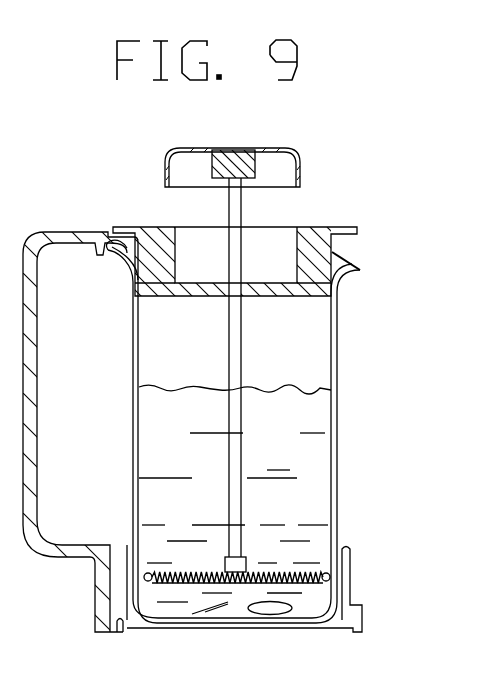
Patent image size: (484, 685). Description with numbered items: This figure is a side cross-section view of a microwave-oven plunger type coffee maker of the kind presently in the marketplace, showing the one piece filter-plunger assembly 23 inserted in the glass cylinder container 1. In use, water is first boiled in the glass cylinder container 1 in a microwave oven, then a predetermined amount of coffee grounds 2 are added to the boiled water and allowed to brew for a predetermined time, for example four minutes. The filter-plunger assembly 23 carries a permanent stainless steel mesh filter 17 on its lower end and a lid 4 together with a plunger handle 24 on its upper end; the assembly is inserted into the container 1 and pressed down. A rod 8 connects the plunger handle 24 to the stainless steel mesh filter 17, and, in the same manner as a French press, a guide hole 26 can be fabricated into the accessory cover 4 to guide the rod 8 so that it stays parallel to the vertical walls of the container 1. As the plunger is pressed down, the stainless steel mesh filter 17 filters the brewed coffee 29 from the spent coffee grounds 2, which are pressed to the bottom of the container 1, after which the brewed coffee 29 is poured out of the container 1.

The glass cylinder container 1 is at (242, 432).
The coffee grounds 2 is at (300, 600).
The lid 4 is at (229, 237).
The rod 8 is at (309, 375).
The stainless steel mesh filter 17 is at (279, 546).
The filter-plunger assembly 23 is at (299, 130).
The plunger handle 24 is at (287, 167).
The guide hole 26 is at (295, 242).
The brewed coffee 29 is at (276, 493).